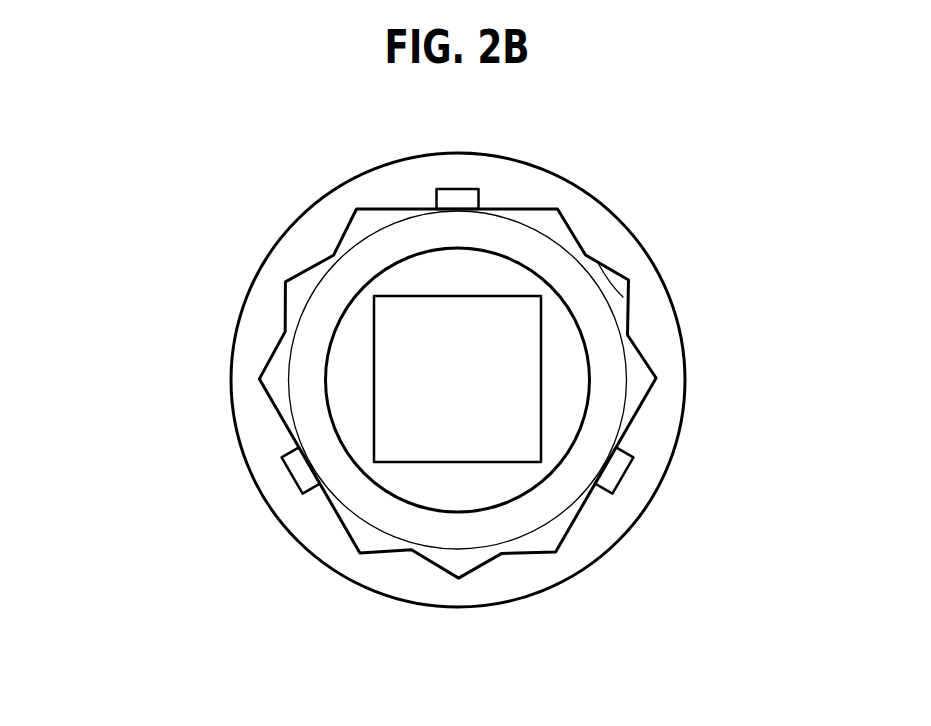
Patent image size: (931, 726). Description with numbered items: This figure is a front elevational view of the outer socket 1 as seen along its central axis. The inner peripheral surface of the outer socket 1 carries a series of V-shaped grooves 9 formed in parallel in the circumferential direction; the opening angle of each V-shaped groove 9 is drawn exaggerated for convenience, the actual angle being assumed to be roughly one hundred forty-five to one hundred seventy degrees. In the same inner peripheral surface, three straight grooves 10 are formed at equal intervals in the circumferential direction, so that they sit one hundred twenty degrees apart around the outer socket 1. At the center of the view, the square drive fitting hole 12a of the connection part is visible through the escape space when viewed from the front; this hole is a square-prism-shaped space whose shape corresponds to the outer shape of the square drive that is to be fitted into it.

The outer socket 1 is at (288, 203).
The V-shaped groove 9 is at (263, 396).
The straight groove 10 is at (458, 203).
The square drive fitting hole 12a is at (553, 363).